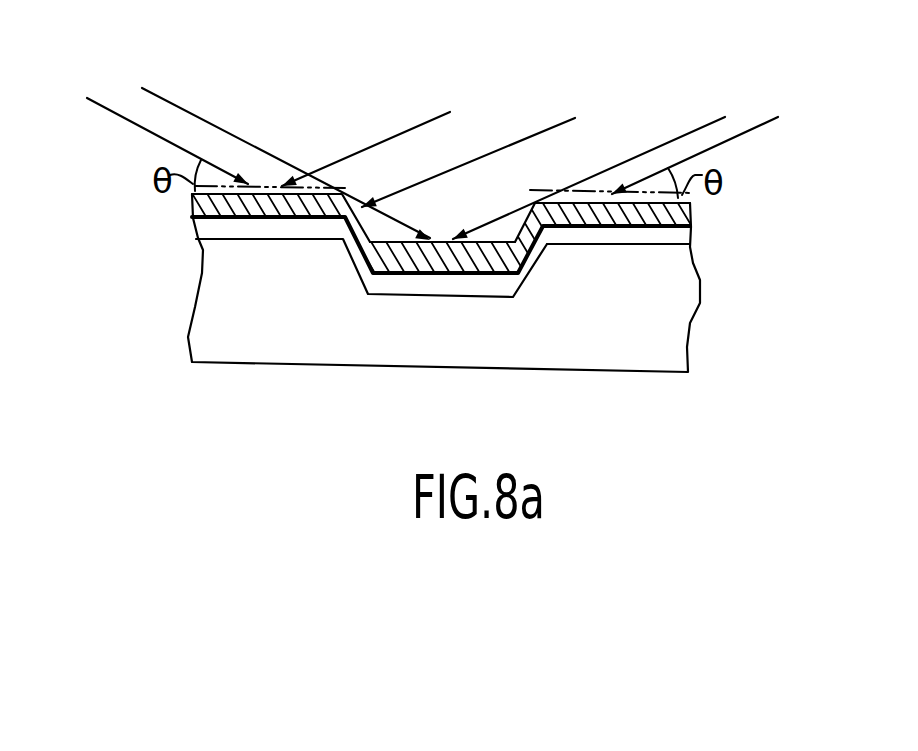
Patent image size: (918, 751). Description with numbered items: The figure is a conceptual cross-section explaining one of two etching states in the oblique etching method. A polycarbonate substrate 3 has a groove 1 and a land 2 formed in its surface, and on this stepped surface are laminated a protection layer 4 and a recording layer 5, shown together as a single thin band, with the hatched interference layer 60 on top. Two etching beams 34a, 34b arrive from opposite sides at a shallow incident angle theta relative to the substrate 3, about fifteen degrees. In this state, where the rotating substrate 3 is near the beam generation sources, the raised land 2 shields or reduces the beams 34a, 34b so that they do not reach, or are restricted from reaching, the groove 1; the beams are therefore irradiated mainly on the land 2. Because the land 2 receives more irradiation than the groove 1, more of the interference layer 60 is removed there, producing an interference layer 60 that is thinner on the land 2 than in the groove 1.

The groove 1 is at (440, 297).
The land 2 is at (622, 246).
The substrate 3 is at (680, 317).
The protection layer 4 is at (513, 264).
The recording layer 5 is at (682, 238).
The interference layer 60 is at (692, 223).
The etching beam 34a is at (158, 96).
The etching beam 34b is at (750, 128).